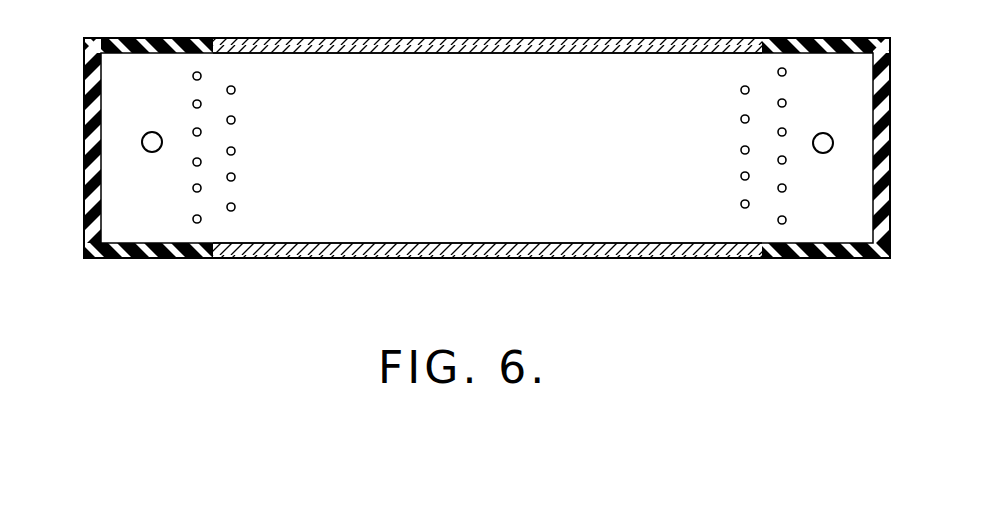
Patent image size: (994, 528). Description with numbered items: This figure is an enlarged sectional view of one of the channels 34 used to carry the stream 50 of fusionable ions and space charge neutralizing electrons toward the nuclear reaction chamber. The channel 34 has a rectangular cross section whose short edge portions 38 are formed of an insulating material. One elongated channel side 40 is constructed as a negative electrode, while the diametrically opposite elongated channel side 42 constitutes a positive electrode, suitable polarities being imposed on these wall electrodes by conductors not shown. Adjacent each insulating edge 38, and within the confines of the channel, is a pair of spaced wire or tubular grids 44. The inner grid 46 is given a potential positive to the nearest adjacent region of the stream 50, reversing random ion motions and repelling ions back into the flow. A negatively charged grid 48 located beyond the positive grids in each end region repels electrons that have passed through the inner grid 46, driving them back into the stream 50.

The channel 34 is at (262, 258).
The edge portion 38 is at (92, 173).
The elongated channel side 40 is at (487, 38).
The elongated channel side 42 is at (455, 258).
The wire or tubular grids 44 is at (237, 121).
The inner grid 46 is at (236, 154).
The negatively charged grid 48 is at (193, 79).
The stream 50 is at (494, 179).